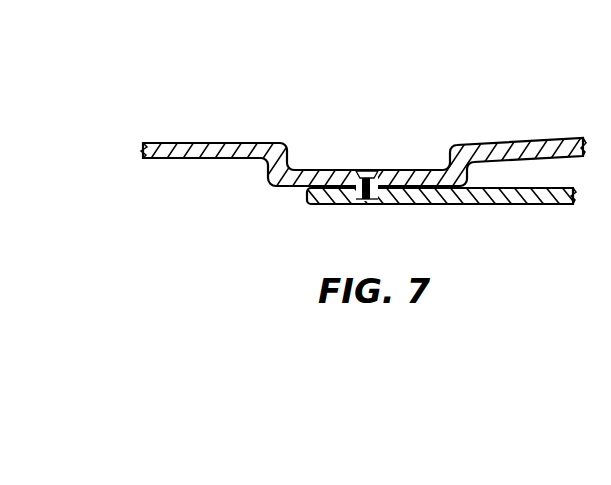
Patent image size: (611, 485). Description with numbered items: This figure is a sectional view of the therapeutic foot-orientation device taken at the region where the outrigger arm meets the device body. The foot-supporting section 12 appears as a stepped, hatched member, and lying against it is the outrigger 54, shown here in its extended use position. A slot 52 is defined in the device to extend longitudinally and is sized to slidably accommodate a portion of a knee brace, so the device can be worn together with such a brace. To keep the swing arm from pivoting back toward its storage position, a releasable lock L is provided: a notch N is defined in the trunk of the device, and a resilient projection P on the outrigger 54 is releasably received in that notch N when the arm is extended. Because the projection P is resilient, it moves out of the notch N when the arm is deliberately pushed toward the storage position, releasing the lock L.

The foot-supporting section 12 is at (527, 144).
The outrigger 54 is at (543, 198).
The slot 52 is at (304, 141).
The releasable lock L is at (376, 136).
The notch N is at (407, 173).
The resilient projection P is at (404, 189).